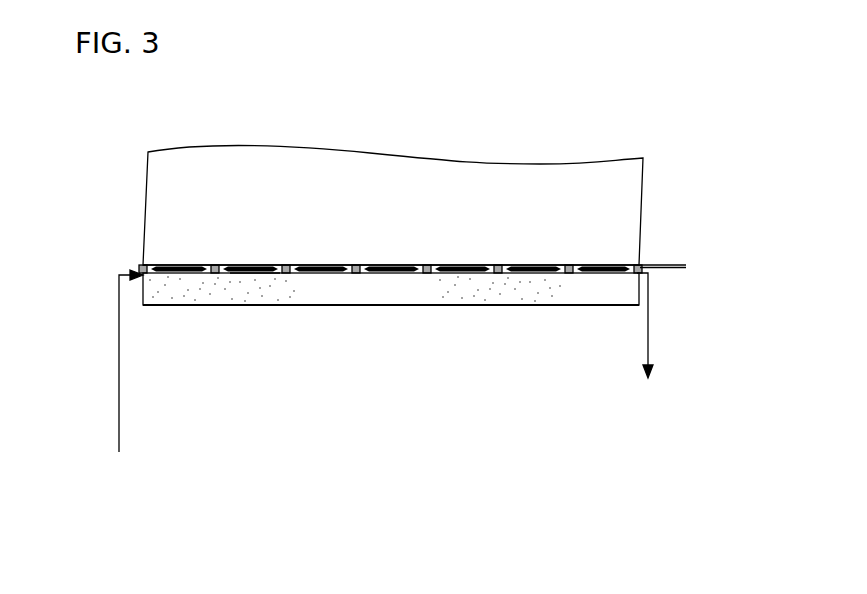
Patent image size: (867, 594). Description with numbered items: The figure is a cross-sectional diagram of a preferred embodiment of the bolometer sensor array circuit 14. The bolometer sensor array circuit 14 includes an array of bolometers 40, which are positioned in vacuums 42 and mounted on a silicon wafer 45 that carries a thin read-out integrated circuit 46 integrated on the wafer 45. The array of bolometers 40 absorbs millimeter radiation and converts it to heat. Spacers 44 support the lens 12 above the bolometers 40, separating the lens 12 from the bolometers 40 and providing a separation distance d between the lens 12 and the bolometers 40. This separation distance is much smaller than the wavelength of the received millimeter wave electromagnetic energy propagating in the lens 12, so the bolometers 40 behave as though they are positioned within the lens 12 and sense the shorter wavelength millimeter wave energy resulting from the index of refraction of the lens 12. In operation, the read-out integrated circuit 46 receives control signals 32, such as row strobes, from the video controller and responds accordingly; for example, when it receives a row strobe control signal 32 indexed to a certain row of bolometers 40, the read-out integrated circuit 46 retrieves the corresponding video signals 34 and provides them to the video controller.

The lens 12 is at (559, 223).
The bolometer sensor array circuit 14 is at (662, 277).
The control signals 32 is at (118, 435).
The video signals 34 is at (652, 350).
The bolometers 40 is at (592, 272).
The vacuums 42 is at (218, 265).
The spacers 44 is at (217, 263).
The silicon wafer 45 is at (308, 307).
The read-out integrated circuit (ROIC) 46 is at (248, 273).